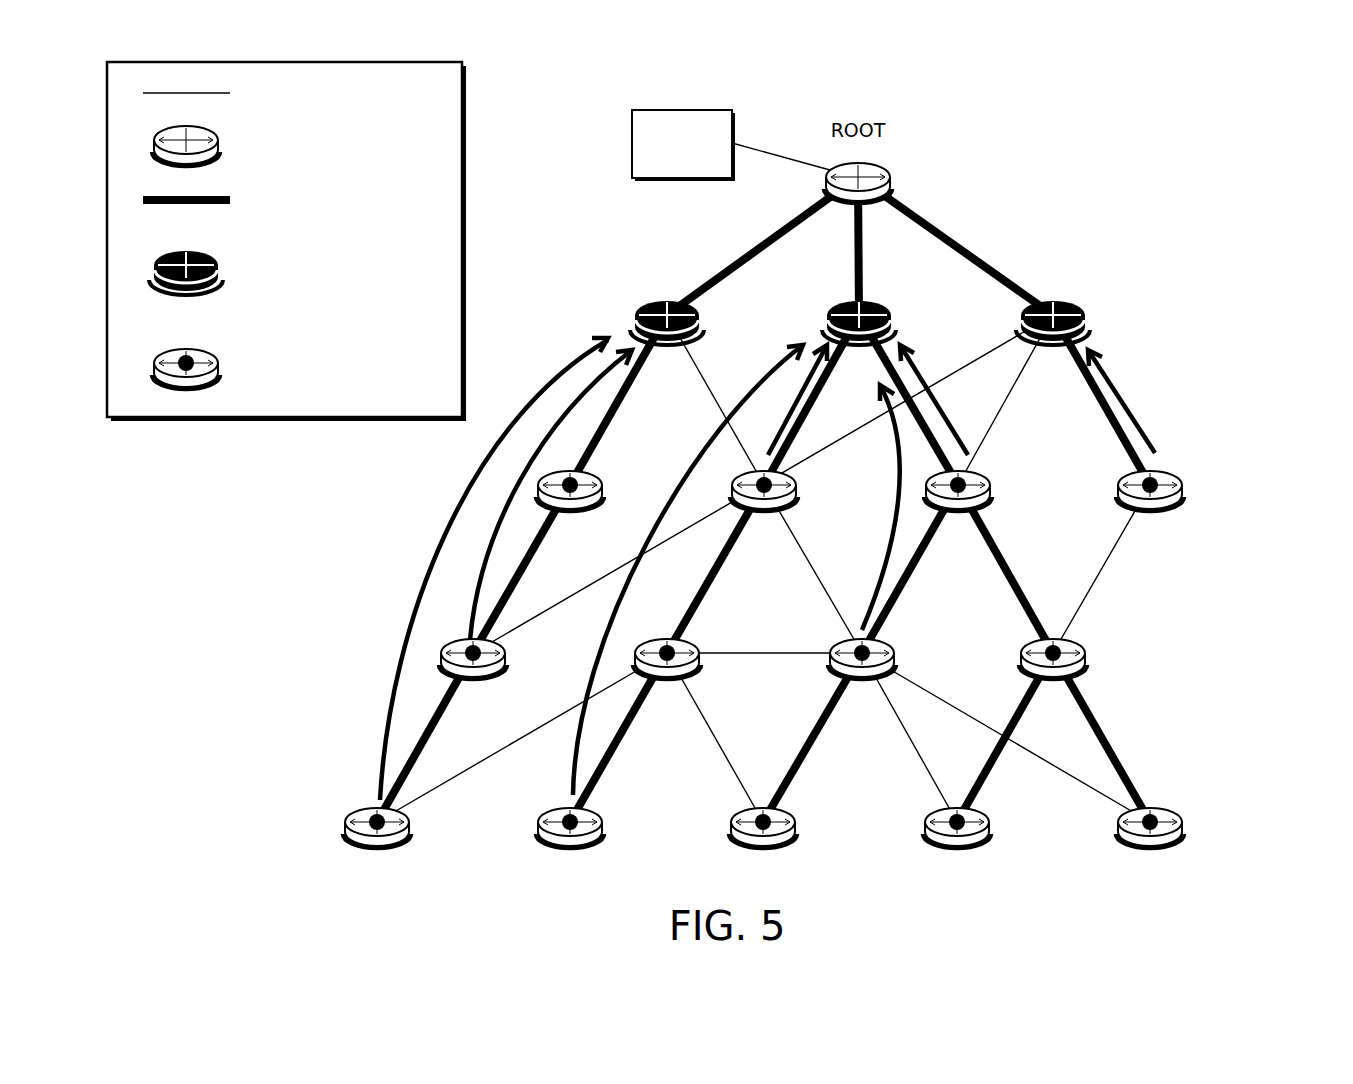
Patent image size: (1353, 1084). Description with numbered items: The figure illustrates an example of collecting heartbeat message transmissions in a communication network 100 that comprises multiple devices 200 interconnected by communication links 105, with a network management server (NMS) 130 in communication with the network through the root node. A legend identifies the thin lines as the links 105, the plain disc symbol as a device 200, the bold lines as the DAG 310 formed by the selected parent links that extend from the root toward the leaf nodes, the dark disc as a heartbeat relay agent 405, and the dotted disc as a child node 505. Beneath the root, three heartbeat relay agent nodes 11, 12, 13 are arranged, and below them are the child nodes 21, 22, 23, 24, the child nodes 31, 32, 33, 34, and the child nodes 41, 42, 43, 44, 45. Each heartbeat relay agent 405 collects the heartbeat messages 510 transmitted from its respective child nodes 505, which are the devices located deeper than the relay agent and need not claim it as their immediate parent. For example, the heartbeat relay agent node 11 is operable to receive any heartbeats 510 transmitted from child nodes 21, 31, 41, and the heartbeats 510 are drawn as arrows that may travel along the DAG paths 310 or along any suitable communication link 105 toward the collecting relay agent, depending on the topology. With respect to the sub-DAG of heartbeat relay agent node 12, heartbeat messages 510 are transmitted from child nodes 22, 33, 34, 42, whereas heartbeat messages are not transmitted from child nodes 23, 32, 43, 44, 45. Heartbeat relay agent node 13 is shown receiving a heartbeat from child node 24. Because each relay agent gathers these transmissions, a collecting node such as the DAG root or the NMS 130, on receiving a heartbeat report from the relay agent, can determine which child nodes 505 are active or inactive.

The computer network 100 is at (1241, 122).
The links 105 is at (251, 93).
The network management server (NMS) 130 is at (667, 168).
The devices 200 is at (263, 146).
The DAG 310 is at (244, 200).
The heartbeat relay agent 405 is at (271, 280).
The child node 505 is at (267, 366).
The heartbeat message 510 is at (440, 538).
The heartbeat relay agent node 11 is at (667, 341).
The heartbeat relay agent node 12 is at (859, 341).
The node 13 is at (1053, 341).
The child node 21 is at (570, 509).
The child node 22 is at (764, 509).
The child node 23 is at (958, 509).
The node 24 is at (1150, 509).
The child node 31 is at (473, 678).
The child node 32 is at (667, 678).
The child node 33 is at (862, 678).
The child node 34 is at (1053, 678).
The child node 41 is at (377, 847).
The child node 42 is at (570, 847).
The child node 43 is at (763, 847).
The child node 44 is at (957, 847).
The child node 45 is at (1150, 847).